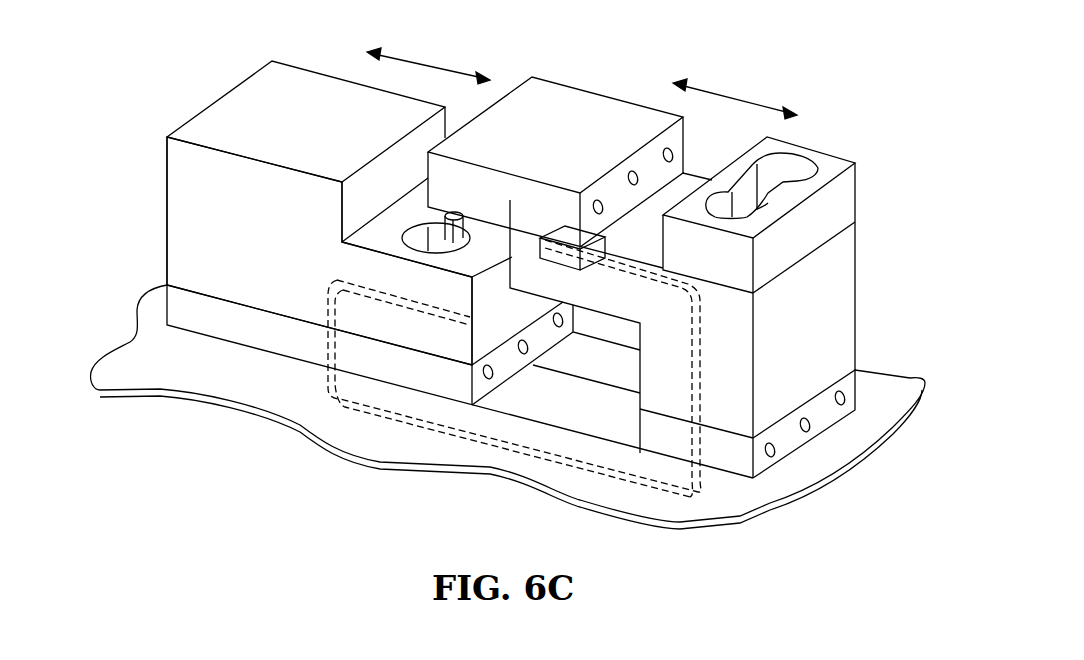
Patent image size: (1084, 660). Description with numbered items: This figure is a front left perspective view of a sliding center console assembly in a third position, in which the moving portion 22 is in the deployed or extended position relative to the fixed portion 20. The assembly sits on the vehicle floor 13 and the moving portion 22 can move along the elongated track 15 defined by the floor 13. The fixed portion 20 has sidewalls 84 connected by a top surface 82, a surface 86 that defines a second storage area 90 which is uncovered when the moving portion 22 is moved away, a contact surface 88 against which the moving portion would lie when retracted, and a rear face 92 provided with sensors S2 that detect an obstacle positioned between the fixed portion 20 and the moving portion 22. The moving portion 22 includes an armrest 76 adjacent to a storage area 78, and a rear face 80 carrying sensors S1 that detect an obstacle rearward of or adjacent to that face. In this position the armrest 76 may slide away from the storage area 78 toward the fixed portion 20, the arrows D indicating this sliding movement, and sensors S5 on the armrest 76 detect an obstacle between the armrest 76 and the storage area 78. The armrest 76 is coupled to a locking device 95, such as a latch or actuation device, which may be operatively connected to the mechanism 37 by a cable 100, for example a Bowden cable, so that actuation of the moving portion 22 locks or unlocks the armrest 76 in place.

The vehicle floor 13 is at (135, 370).
The elongated track 15 is at (590, 390).
The fixed portion 20 is at (167, 217).
The moving portion 22 is at (852, 298).
The mechanism 37 is at (322, 305).
The armrest 76 is at (642, 107).
The storage area 78 is at (852, 193).
The rear face 80 is at (804, 331).
The top surface 82 is at (225, 97).
The sidewalls 84 is at (319, 251).
The surface 86 is at (382, 233).
The contact surface 88 is at (400, 165).
The second storage area 90 is at (458, 213).
The rear face 92 is at (487, 318).
The locking device 95 is at (537, 235).
The cable 100 is at (700, 490).
The sensors S1 is at (780, 457).
The sensors S2 is at (562, 325).
The sensors S5 is at (598, 200).
The sliding direction D is at (433, 63).